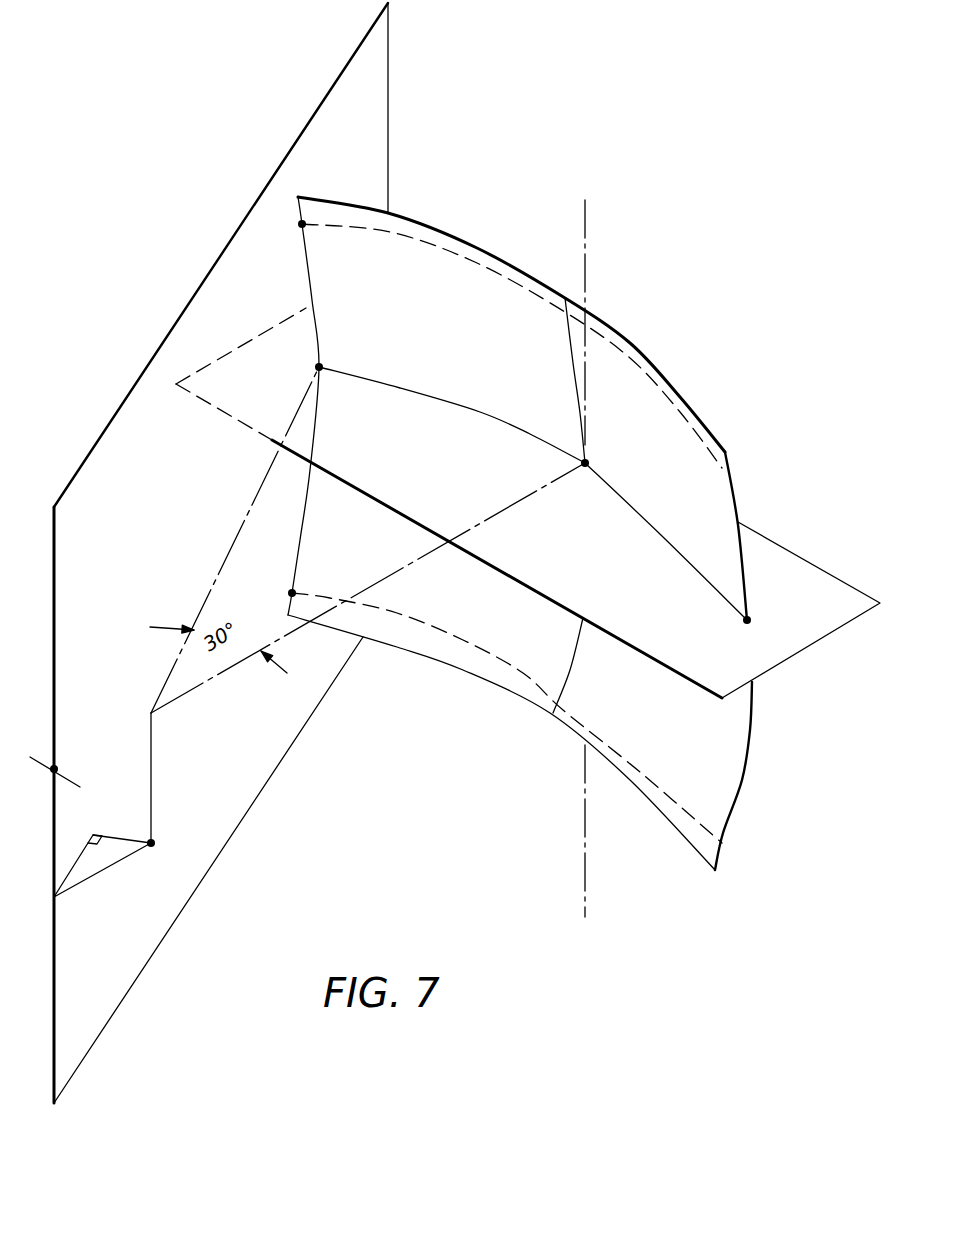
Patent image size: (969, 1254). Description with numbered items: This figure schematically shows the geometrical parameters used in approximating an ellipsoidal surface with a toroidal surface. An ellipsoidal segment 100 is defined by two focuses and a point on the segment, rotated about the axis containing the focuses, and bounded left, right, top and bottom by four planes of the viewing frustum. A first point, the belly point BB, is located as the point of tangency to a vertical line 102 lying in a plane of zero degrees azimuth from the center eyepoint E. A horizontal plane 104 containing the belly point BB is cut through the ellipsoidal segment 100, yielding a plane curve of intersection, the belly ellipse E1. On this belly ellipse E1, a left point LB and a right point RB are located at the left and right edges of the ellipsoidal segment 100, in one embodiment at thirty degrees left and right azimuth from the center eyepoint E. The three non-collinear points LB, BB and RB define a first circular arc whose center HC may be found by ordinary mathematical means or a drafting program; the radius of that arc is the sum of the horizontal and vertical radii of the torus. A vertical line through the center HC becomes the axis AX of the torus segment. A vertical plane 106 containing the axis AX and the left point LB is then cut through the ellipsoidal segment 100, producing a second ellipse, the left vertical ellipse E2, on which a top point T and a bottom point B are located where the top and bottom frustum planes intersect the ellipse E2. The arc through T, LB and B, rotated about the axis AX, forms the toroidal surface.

The ellipsoidal segment 100 is at (692, 399).
The vertical line 102 is at (578, 228).
The horizontal plane 104 is at (803, 598).
The vertical plane 106 is at (393, 127).
The axis of torus AX is at (57, 622).
The belly ellipse E1 is at (417, 394).
The left vertical ellipse E2 is at (304, 497).
The top side corner of torus segment T is at (293, 225).
The left point on belly LB is at (297, 374).
The belly point BB is at (581, 481).
The right point on belly RB is at (731, 635).
The bottom side corner of torus segment B is at (283, 586).
The center eyepoint E is at (113, 805).
The center of arc LB-BB-RB HC is at (62, 772).